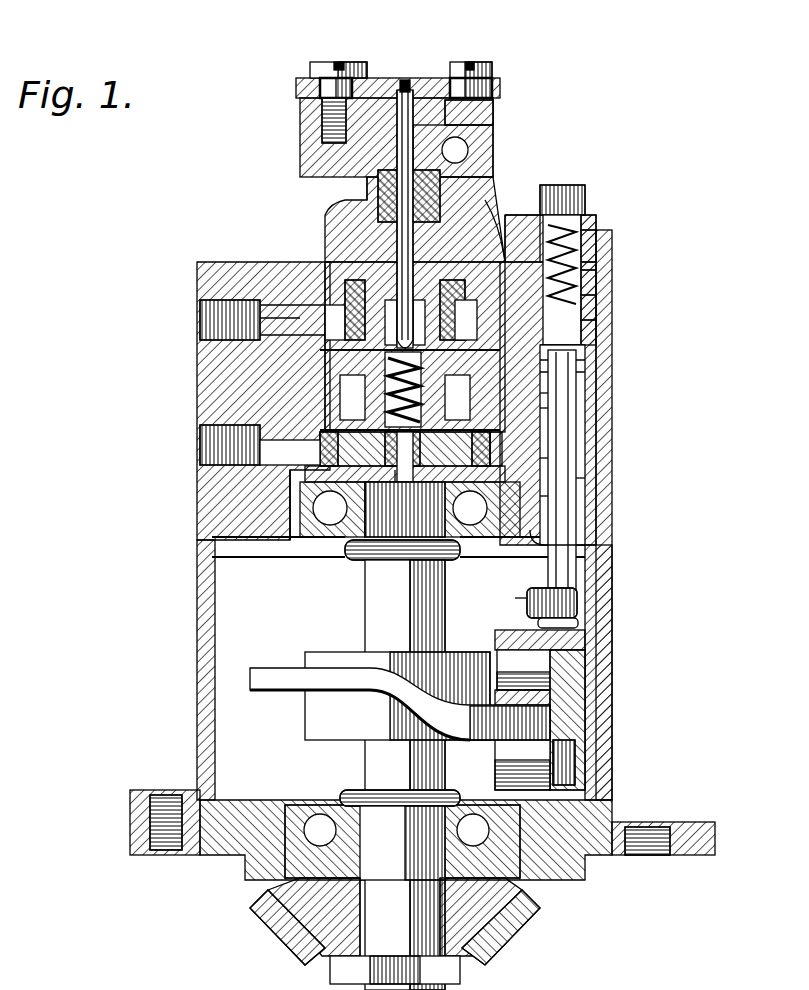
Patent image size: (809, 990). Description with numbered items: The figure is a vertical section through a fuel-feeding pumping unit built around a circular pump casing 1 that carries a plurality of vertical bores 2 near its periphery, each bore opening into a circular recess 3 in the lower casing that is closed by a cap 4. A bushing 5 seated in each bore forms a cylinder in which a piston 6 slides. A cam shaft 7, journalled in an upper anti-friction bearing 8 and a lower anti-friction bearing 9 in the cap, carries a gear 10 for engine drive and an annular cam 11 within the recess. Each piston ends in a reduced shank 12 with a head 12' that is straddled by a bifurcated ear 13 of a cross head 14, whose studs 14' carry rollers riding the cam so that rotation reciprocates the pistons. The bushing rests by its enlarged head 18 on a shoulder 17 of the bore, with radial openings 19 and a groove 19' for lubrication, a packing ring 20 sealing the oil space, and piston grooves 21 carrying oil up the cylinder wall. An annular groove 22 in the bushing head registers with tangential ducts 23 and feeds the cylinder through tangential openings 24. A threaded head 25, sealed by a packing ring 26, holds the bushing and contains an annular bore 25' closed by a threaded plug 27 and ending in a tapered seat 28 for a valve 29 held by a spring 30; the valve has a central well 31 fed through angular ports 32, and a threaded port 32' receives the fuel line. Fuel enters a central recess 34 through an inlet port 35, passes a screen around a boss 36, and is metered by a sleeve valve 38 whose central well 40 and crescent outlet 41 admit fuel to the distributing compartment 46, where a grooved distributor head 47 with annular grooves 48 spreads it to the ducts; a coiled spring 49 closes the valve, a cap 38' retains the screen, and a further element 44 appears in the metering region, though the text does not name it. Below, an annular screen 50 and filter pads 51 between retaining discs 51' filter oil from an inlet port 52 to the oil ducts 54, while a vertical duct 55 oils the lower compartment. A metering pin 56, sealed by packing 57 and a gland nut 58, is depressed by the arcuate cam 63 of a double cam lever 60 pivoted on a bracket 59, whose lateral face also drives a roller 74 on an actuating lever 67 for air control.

The pump casing 1 is at (612, 292).
The vertical bores 2 is at (200, 320).
The circular recess 3 is at (200, 453).
The cap 4 is at (215, 858).
The bushing 5 is at (612, 345).
The piston 6 is at (612, 478).
The cam shaft 7 is at (368, 606).
The anti-friction bearing 8 is at (200, 555).
The anti-friction bearing 9 is at (295, 812).
The gear or pinion 10 is at (275, 915).
The annular cam 11 is at (285, 683).
The reduced shank 12 is at (609, 592).
The head 12' is at (618, 611).
The bifurcated ear 13 is at (527, 597).
The cross head 14 is at (591, 669).
The vertical spaced studs 14' is at (629, 707).
The shoulder 17 is at (612, 436).
The enlarged head 18 is at (612, 408).
The radial openings 19 is at (633, 489).
The groove 19' is at (633, 397).
The packing ring 20 is at (612, 540).
The annular grooves 21 is at (612, 458).
The annular groove 22 is at (612, 357).
The tangential ducts 23 is at (495, 232).
The tangential openings 24 is at (612, 366).
The threaded head 25 is at (602, 211).
The annular bore 25' is at (580, 206).
The packing ring 26 is at (608, 332).
The threaded plug 27 is at (556, 188).
The tapered seat 28 is at (562, 443).
The valve 29 is at (608, 278).
The spring 30 is at (612, 262).
The central well 31 is at (608, 318).
The angular ports 32 is at (648, 274).
The threaded port 32' is at (661, 213).
The central recess 34 is at (305, 330).
The inlet port 35 is at (262, 318).
The boss 36 is at (340, 293).
The metering sleeve valve 38 is at (395, 219).
The cap 38' is at (529, 141).
The central well 40 is at (345, 203).
The outlet 41 is at (411, 216).
The spring 44 is at (200, 395).
The distributing compartment 46 is at (200, 370).
The distributor head 47 is at (200, 352).
The annular grooves 48 is at (200, 385).
The coiled spring 49 is at (200, 418).
The annular screen 50 is at (200, 478).
The filter pads 51 is at (403, 479).
The retaining discs 51' is at (181, 505).
The inlet port 52 is at (200, 462).
The oil ducts 54 is at (505, 410).
The vertical duct 55 is at (300, 520).
The metering pin 56 is at (404, 170).
The packing 57 is at (493, 140).
The gland nut 58 is at (458, 105).
The bracket 59 is at (305, 132).
The double cam lever 60 is at (306, 82).
The arcuate cam 63 is at (402, 98).
The actuating lever 67 is at (500, 102).
The roller 74 is at (495, 72).